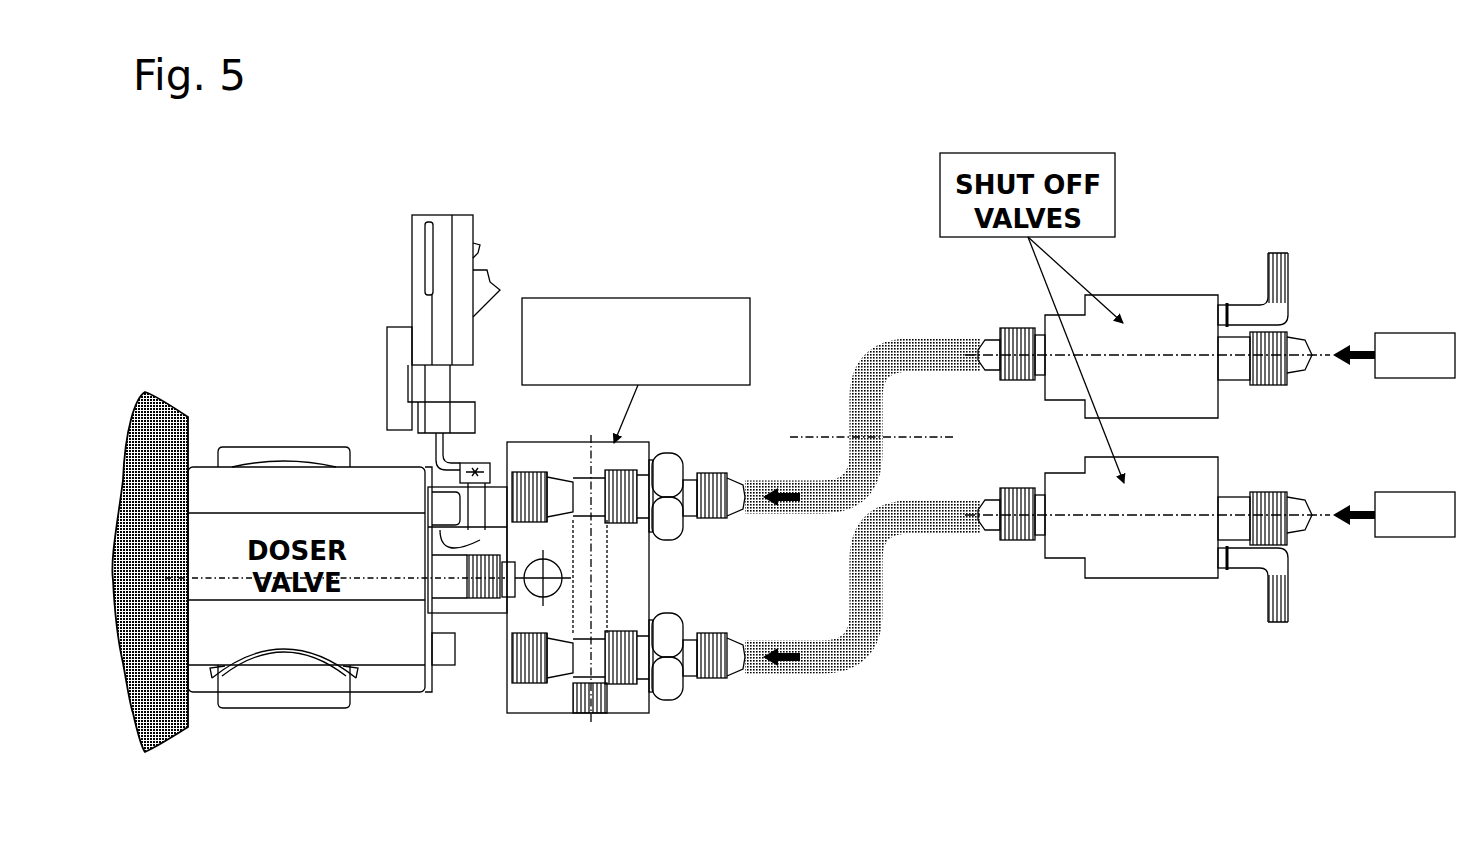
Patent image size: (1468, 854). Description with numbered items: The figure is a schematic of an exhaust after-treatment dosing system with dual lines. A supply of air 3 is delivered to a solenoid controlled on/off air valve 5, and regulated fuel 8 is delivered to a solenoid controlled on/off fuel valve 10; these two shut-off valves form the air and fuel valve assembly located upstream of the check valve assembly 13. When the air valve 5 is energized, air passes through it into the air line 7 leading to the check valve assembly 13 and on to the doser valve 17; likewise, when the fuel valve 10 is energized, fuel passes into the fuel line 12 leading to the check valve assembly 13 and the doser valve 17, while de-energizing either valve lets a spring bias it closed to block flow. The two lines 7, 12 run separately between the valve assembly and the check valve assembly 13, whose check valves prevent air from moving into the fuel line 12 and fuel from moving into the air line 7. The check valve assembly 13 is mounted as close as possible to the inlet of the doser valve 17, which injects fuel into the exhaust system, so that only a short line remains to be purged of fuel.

The supply of air 3 is at (1402, 330).
The solenoid controlled on/off air valve 5 is at (1040, 390).
The air line 7 is at (890, 345).
The regulated fuel 8 is at (1407, 538).
The solenoid controlled on/off fuel valve 10 is at (1043, 557).
The fuel line 12 is at (868, 643).
The check valve assembly 13 is at (575, 295).
The doser valve 17 is at (295, 712).